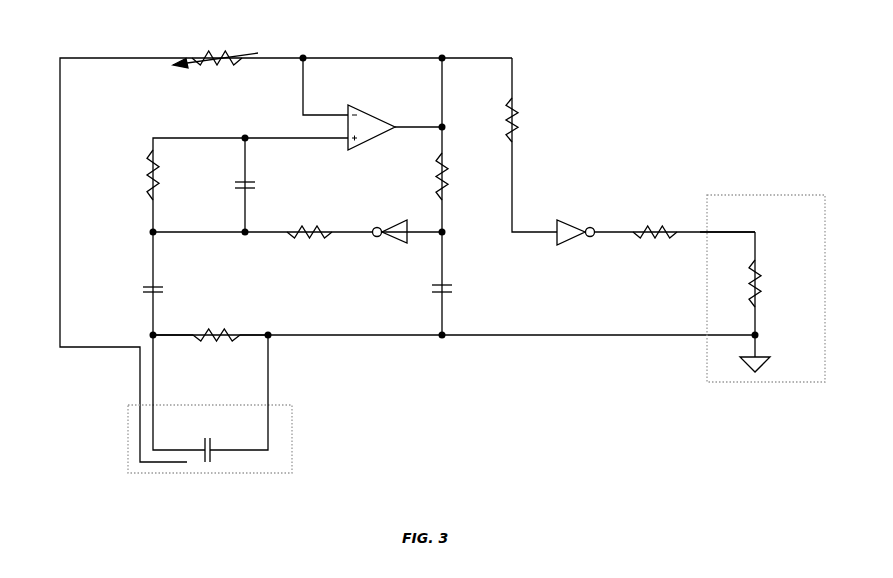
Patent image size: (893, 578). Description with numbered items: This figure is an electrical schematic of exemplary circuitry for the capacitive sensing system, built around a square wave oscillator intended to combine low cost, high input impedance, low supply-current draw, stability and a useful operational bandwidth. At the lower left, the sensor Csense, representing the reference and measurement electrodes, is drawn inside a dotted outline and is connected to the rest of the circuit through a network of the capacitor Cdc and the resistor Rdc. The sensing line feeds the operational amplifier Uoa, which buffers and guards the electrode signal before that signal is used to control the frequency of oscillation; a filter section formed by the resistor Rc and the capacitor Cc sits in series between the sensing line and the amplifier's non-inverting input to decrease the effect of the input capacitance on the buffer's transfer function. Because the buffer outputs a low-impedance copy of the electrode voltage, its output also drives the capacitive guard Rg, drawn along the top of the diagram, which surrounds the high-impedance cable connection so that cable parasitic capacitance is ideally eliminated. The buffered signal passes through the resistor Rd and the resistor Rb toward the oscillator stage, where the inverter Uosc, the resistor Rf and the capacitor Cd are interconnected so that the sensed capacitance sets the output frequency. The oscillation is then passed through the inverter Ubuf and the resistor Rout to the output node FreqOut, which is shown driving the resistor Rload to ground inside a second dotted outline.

The capacitive guard Rg is at (215, 49).
The operational amplifier Uoa is at (371, 117).
The bias resistor Rb is at (525, 120).
The resistor Rd is at (457, 176).
The resistor Rc is at (136, 175).
The capacitor Cc is at (235, 174).
The feedback resistor Rf is at (309, 221).
The oscillator inverter Uosc is at (385, 223).
The capacitor Cd is at (450, 278).
The buffer inverter Ubuf is at (575, 224).
The output resistor Rout is at (654, 221).
The frequency output node FreqOut is at (741, 223).
The load resistor Rload is at (782, 283).
The DC blocking capacitor Cdc is at (136, 278).
The DC resistor Rdc is at (210, 324).
The sensor Csense is at (210, 398).